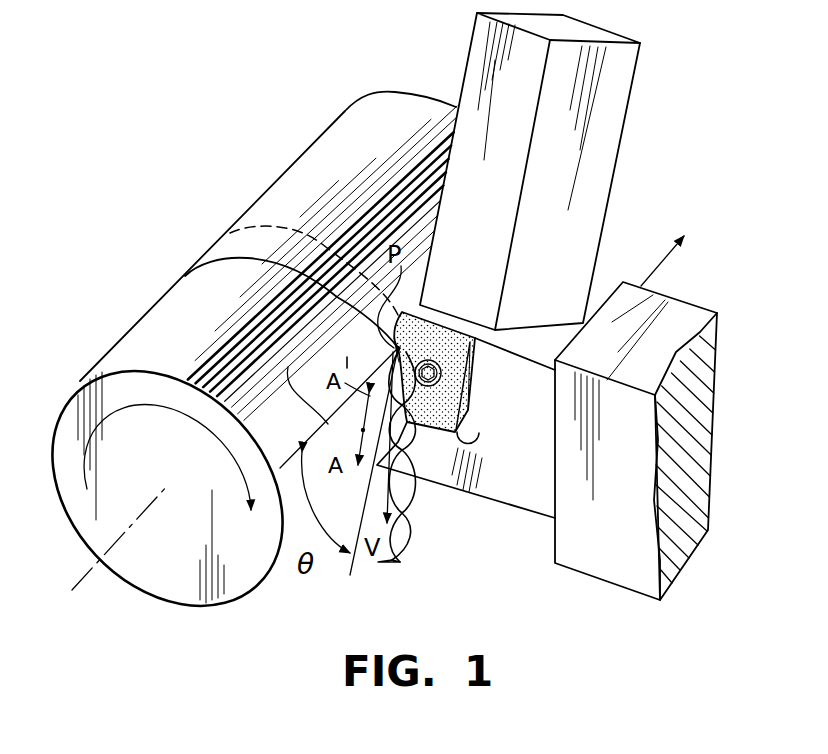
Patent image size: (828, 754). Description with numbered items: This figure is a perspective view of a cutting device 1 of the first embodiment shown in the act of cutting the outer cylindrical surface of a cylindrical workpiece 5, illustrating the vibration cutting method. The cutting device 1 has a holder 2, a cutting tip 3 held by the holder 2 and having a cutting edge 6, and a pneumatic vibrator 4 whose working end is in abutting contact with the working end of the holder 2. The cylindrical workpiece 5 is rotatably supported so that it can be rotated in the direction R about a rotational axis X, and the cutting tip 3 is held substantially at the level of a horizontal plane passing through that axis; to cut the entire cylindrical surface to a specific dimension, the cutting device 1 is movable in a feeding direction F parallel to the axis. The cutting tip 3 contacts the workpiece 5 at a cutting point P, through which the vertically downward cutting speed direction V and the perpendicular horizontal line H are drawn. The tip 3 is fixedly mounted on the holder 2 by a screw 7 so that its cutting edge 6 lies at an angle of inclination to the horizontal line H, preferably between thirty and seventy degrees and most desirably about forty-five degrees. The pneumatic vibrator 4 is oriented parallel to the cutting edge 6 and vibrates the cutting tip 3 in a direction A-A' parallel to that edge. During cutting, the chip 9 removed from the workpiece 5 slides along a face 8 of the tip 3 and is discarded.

The cutting device 1 is at (674, 115).
The holder 2 is at (517, 488).
The cutting tip 3 is at (486, 412).
The pneumatic vibrator 4 is at (590, 186).
The cylindrical workpiece 5 is at (192, 286).
The cutting edge 6 is at (398, 348).
The screw 7 is at (441, 320).
The face 8 is at (466, 372).
The chip 9 is at (407, 498).